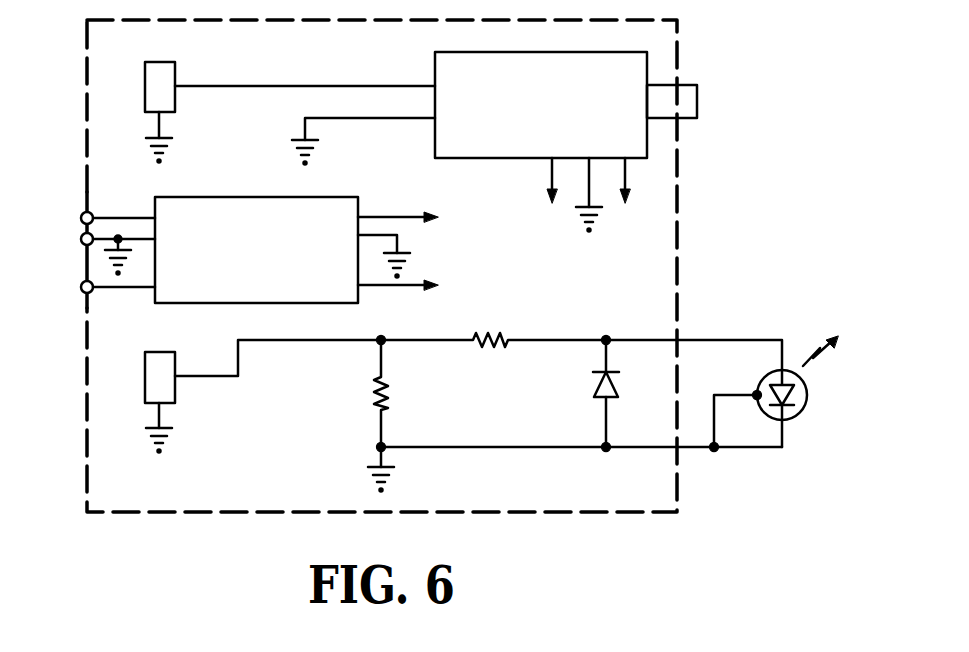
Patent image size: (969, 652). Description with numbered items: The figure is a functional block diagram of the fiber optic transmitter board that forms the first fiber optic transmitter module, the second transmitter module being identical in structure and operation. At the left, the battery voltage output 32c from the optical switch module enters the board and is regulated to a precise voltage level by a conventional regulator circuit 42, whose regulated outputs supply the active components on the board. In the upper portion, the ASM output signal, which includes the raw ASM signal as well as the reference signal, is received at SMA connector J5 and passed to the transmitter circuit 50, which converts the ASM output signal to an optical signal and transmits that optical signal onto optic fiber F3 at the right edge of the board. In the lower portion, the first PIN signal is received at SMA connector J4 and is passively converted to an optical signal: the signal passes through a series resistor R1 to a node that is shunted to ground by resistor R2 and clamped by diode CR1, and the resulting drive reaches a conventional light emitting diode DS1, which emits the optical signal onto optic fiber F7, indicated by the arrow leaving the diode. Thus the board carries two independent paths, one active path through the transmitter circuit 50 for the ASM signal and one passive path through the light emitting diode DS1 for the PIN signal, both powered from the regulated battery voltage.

The SMA connector J5 is at (176, 72).
The transmitter circuit 50 is at (434, 72).
The optic fiber F3 is at (698, 95).
The regulator circuit 42 is at (335, 197).
The battery voltage output 32c is at (80, 192).
The SMA connector J4 is at (176, 390).
The resistor R1 is at (493, 327).
The resistor R2 is at (395, 414).
The diode CR1 is at (584, 394).
The light emitting diode DS1 is at (720, 397).
The optic fiber F7 is at (819, 338).